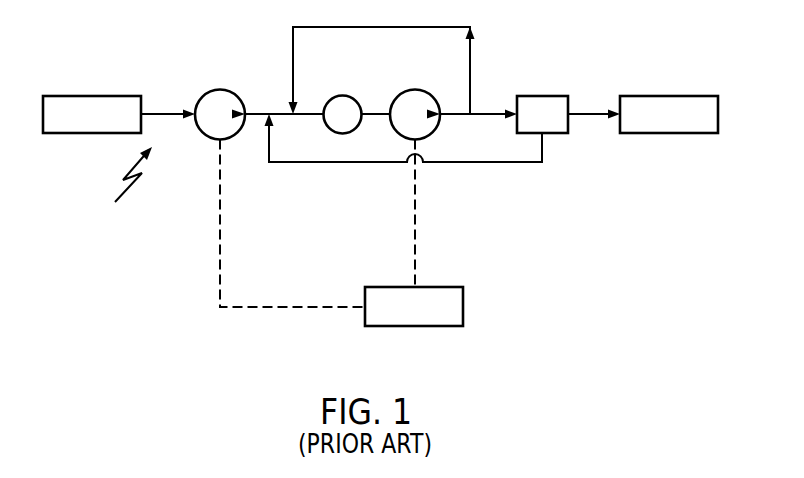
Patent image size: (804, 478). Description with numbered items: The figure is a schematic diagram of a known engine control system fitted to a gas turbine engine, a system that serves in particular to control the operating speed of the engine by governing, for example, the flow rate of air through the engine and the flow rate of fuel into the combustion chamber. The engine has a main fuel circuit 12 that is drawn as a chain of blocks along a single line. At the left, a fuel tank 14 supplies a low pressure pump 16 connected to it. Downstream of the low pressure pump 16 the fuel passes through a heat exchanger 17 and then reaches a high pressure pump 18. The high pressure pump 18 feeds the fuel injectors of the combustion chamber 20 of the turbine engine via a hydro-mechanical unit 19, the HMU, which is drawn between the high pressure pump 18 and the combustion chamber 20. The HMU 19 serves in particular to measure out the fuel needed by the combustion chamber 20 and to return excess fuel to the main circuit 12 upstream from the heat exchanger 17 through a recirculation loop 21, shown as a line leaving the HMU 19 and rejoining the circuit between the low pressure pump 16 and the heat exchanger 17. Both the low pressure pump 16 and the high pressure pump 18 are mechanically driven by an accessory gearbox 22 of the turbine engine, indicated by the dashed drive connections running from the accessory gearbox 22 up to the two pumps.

The main fuel circuit 12 is at (122, 189).
The fuel tank 14 is at (92, 96).
The low pressure pump 16 is at (219, 89).
The heat exchanger 17 is at (343, 95).
The high pressure pump 18 is at (415, 89).
The hydro-mechanical unit 19 is at (543, 96).
The combustion chamber 20 is at (665, 96).
The recirculation loop 21 is at (542, 153).
The accessory gearbox 22 is at (463, 305).